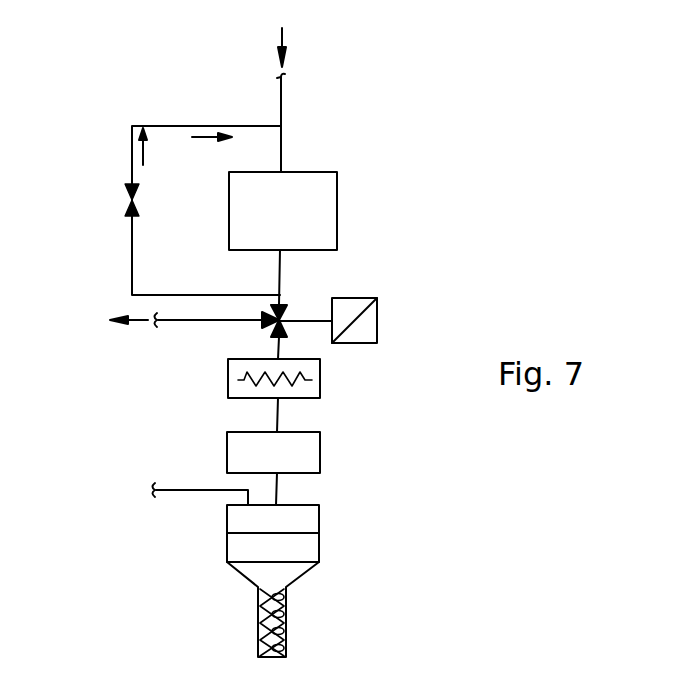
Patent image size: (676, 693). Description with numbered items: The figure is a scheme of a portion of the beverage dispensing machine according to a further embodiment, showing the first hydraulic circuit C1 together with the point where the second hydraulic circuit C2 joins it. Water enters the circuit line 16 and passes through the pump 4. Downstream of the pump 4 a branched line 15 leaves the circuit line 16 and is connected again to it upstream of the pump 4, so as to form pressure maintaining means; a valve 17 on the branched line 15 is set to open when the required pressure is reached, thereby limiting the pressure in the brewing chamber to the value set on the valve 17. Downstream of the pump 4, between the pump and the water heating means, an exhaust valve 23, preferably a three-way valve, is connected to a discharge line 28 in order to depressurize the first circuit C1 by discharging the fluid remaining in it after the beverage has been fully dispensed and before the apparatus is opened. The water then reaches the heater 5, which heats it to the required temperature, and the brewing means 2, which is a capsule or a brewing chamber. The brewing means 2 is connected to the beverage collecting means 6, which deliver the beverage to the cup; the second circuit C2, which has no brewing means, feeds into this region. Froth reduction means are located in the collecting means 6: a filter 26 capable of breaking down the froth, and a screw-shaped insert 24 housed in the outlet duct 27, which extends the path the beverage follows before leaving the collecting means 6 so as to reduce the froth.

The first hydraulic circuit C1 is at (262, 93).
The second hydraulic circuit C2 is at (182, 470).
The circuit line 16 is at (282, 98).
The branched line 15 is at (132, 141).
The valve 17 is at (132, 200).
The pump 4 is at (337, 192).
The exhaust valve 23 is at (377, 318).
The discharge line 28 is at (197, 322).
The heater 5 is at (320, 378).
The brewing means 2 is at (320, 446).
The beverage collecting means 6 is at (319, 520).
The filter 26 is at (250, 533).
The insert 24 is at (250, 623).
The outlet duct 27 is at (286, 600).